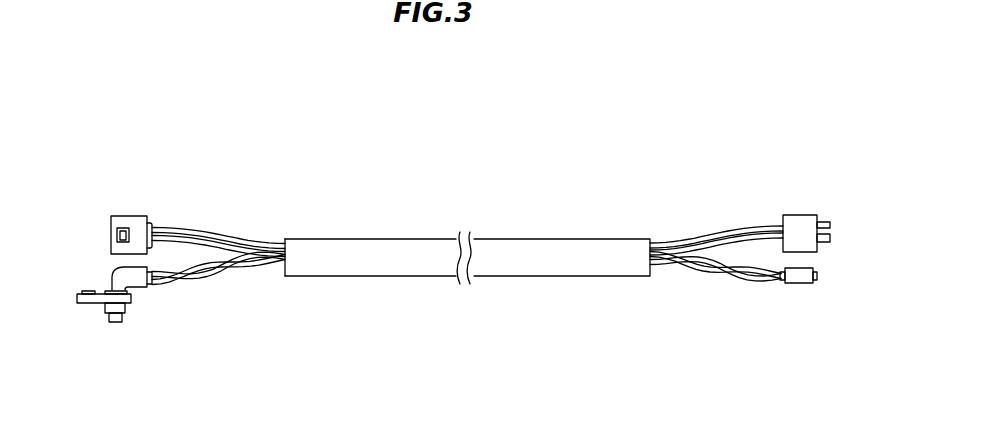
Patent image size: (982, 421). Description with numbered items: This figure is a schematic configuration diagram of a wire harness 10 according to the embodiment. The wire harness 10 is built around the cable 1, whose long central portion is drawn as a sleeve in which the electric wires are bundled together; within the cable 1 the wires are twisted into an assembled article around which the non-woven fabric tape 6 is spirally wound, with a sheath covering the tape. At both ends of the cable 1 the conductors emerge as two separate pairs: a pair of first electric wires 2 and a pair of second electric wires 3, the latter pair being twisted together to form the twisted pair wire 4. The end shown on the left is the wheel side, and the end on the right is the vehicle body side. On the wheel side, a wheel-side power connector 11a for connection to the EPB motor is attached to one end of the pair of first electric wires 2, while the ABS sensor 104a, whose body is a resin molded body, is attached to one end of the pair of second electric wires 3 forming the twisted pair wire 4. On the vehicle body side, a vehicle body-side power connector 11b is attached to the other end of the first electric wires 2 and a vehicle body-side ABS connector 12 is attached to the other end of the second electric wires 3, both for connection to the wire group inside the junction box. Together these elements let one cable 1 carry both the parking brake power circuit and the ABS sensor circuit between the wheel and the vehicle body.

The wire harness 10 is at (606, 184).
The cable 1 is at (467, 246).
The non-woven fabric tape 6 is at (580, 268).
The wheel-side power connector 11a is at (110, 240).
The vehicle body-side power connector 11b is at (830, 238).
The ABS sensor 104a is at (112, 277).
The vehicle body-side ABS connector 12 is at (817, 278).
The second electric wires 3 is at (187, 235).
The first electric wires 2 is at (193, 277).
The twisted pair wire 4 is at (233, 272).